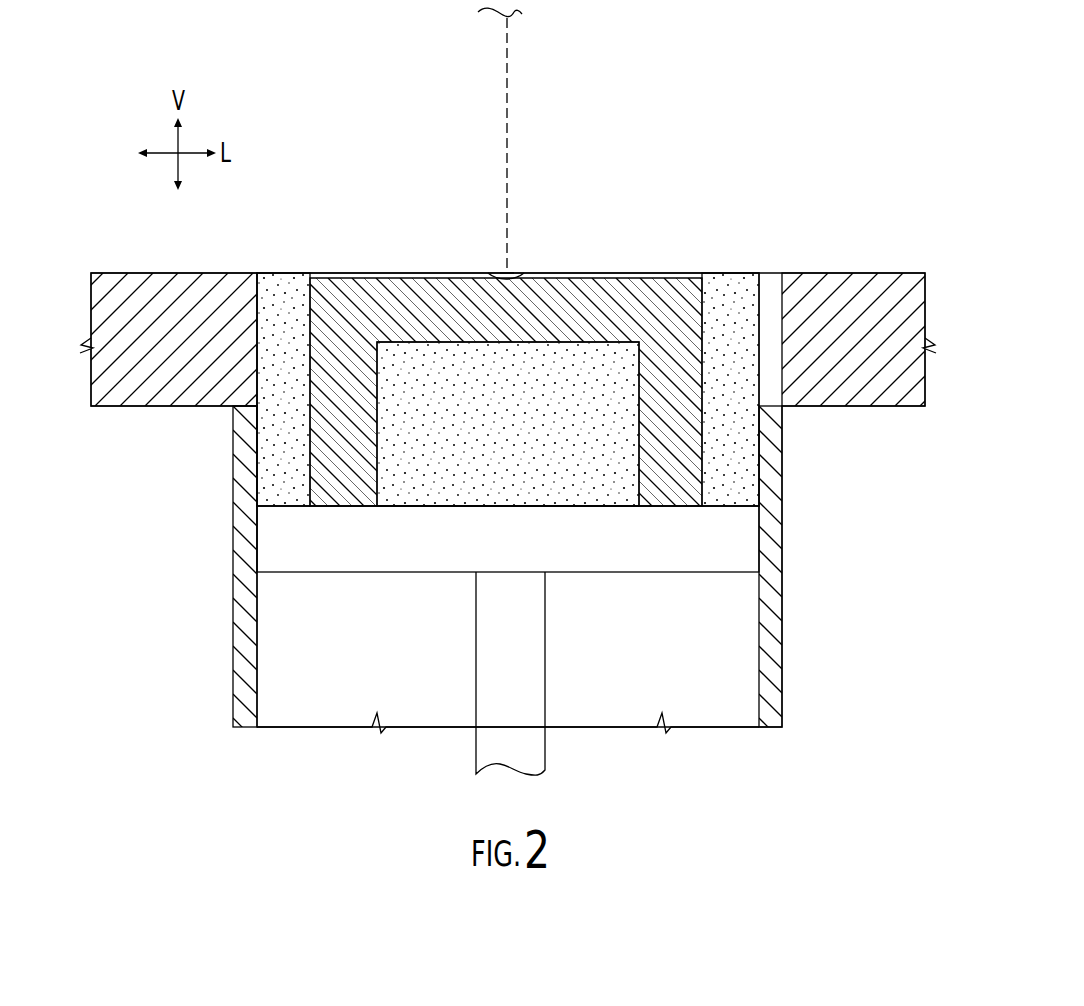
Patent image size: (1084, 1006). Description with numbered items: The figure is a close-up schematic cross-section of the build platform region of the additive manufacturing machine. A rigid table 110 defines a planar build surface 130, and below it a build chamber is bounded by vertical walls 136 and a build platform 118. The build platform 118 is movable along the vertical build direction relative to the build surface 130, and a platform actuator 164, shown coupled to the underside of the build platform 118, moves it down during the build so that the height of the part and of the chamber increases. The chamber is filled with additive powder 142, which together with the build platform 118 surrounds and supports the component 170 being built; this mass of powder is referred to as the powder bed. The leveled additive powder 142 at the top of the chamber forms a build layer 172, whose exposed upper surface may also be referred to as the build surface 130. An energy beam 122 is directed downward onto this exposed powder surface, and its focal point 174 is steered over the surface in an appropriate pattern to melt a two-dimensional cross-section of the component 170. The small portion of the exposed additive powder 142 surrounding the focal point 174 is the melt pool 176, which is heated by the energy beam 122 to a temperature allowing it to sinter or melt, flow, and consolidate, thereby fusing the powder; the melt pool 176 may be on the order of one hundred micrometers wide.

The table 110 is at (140, 399).
The build platform 118 is at (516, 550).
The energy beam 122 is at (506, 65).
The planar build surface 130 is at (128, 272).
The vertical walls 136 is at (773, 548).
The additive powder 142 is at (300, 432).
The platform actuator 164 is at (540, 668).
The component 170 is at (688, 272).
The build layer 172 is at (351, 276).
The focal point 174 is at (507, 271).
The melt pool 176 is at (497, 275).